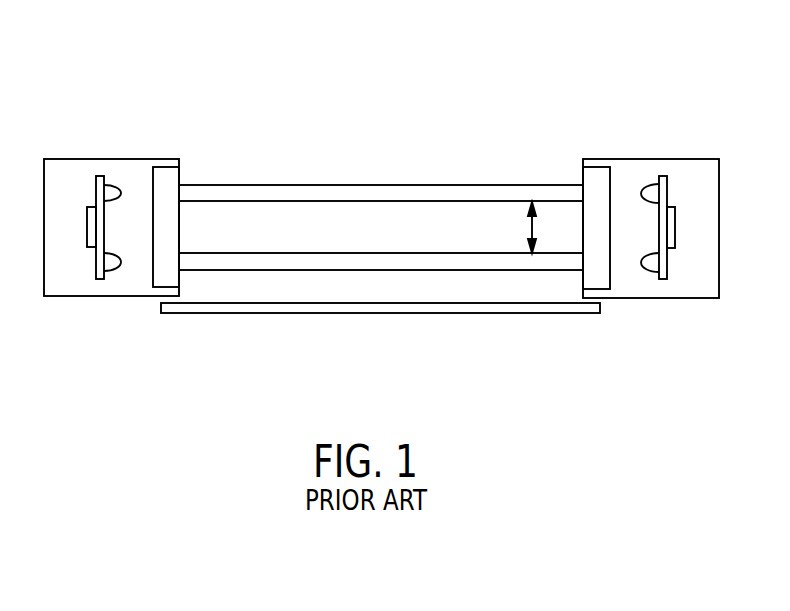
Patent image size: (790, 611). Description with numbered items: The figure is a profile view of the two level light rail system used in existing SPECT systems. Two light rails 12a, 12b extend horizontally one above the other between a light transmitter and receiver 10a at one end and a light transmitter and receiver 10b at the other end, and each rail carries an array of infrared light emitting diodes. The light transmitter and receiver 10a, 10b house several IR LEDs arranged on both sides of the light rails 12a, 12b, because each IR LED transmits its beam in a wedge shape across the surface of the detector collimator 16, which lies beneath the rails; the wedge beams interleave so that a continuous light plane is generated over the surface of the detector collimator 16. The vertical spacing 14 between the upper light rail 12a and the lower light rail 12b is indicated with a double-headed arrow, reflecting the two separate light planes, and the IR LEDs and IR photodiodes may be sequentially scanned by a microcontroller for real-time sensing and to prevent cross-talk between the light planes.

The light transmitter and receiver 10a is at (70, 159).
The light transmitter and receiver 10b is at (610, 159).
The light rail 12a is at (239, 184).
The light rail 12b is at (394, 272).
The rod spacing 14 is at (530, 228).
The detector collimator 16 is at (202, 315).